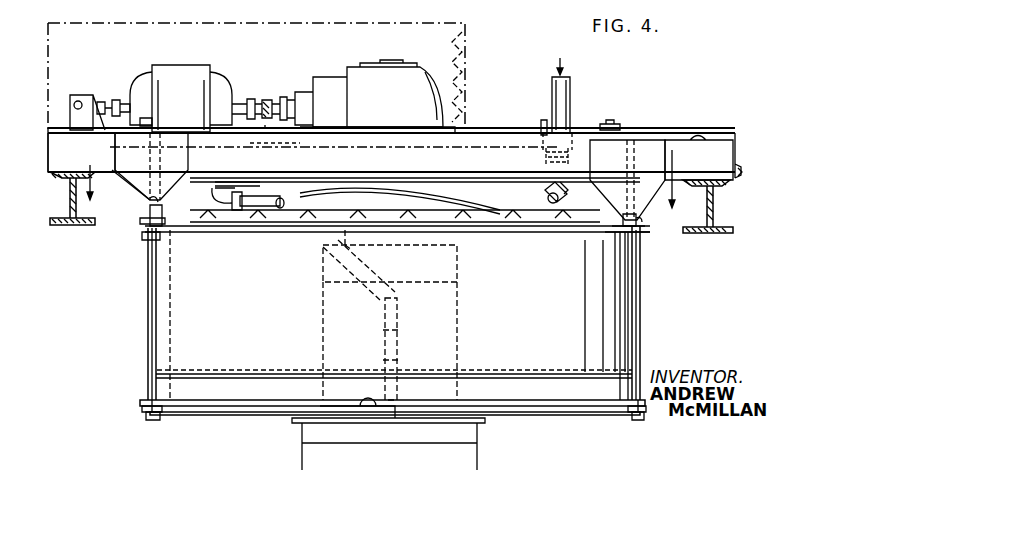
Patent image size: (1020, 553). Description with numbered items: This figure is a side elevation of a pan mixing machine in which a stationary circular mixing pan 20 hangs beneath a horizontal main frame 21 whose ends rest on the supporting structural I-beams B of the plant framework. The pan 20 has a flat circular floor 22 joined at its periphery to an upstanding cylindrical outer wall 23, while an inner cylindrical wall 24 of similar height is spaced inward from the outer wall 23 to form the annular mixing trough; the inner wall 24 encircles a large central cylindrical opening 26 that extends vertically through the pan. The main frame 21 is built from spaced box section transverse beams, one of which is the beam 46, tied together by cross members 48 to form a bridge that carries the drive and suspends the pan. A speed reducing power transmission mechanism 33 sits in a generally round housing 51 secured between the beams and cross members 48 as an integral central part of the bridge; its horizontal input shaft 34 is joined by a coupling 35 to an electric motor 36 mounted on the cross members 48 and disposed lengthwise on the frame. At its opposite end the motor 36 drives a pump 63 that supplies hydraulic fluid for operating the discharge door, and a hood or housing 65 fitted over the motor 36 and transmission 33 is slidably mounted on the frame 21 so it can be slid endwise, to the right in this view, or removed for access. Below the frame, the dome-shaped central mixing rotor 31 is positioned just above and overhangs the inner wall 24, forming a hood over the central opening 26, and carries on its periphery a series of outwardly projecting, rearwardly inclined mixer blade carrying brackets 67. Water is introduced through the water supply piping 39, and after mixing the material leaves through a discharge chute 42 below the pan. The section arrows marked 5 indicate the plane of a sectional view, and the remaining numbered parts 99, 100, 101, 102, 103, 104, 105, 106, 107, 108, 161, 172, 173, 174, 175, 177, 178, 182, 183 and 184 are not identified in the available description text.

The section line arrows 5 is at (389, 177).
The mixing pan 20 is at (150, 297).
The main frame 21 is at (659, 132).
The floor 22 is at (495, 369).
The outer wall 23 is at (622, 347).
The inner cylindrical wall 24 is at (322, 311).
The central cylindrical opening 26 is at (403, 322).
The mixing rotor 31 is at (405, 200).
The speed reducing power transmission mechanism 33 is at (353, 121).
The input shaft 34 is at (288, 104).
The coupling 35 is at (273, 126).
The electric motor 36 is at (180, 74).
The water supply piping 39 is at (551, 82).
The discharge chute 42 is at (470, 455).
The transverse beam 46 is at (750, 177).
The cross members 48 is at (700, 134).
The transmission housing 51 is at (424, 68).
The pump 63 is at (82, 97).
The housing 65 is at (465, 56).
The mixer blade carrying brackets 67 is at (368, 212).
The base plate 99 is at (490, 134).
The elbow 100 is at (240, 192).
The pipe 101 is at (256, 206).
The fitting 102 is at (570, 158).
The nozzle 103 is at (545, 198).
The tank floor plate 104 is at (152, 351).
The suction pipe 105 is at (322, 246).
The supply pipe 106 is at (248, 184).
The fitting 107 is at (542, 170).
The hopper wall 108 is at (122, 194).
The end block 161 is at (76, 122).
The bolt 172 is at (158, 202).
The clip 173 is at (162, 203).
The top plate 174 is at (503, 232).
The hopper 175 is at (628, 212).
The bottom beam 177 is at (240, 402).
The side wall 178 is at (150, 324).
The bolt 182 is at (138, 406).
The nut 183 is at (146, 416).
The flange 184 is at (146, 232).
The transverse beams B is at (70, 225).